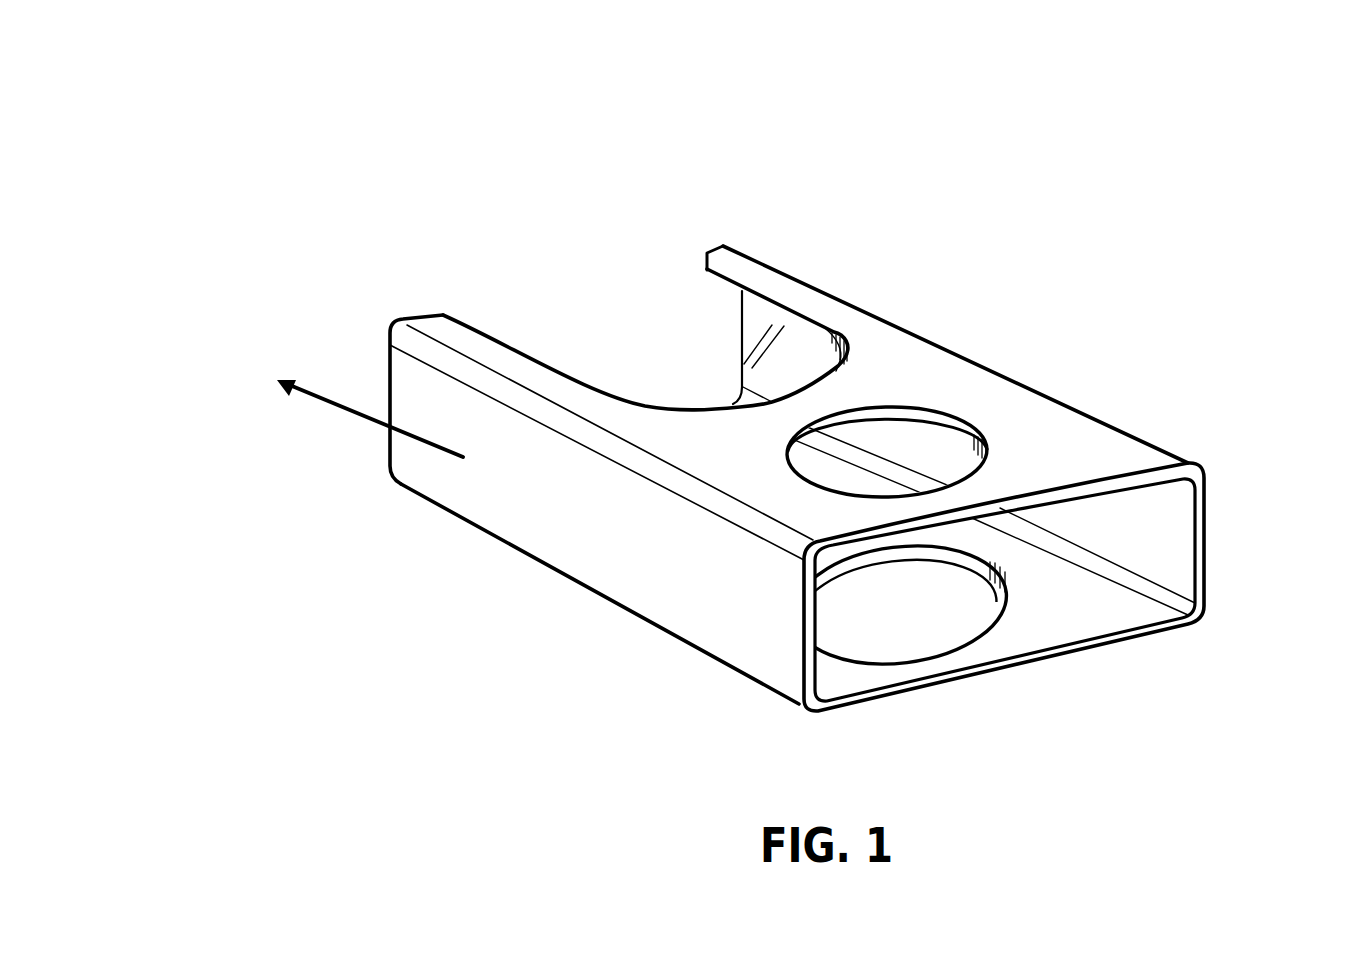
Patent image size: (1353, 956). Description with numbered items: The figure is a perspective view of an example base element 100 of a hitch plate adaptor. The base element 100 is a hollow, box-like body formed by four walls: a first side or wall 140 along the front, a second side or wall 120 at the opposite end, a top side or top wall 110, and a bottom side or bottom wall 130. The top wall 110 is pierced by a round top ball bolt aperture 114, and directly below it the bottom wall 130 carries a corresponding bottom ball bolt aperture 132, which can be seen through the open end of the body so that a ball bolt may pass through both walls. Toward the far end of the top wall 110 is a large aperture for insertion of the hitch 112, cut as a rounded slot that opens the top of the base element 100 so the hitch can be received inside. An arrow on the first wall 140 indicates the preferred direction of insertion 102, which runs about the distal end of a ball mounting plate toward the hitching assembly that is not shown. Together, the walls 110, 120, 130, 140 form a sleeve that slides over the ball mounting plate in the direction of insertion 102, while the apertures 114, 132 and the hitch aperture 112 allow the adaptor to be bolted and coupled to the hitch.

The base element 100 is at (316, 165).
The direction of insertion 102 is at (320, 400).
The top wall 110 is at (1059, 458).
The aperture for insertion of the hitch 112 is at (617, 328).
The top ball bolt aperture 114 is at (897, 446).
The second wall 120 is at (1207, 502).
The bottom wall 130 is at (1090, 662).
The bottom ball bolt aperture 132 is at (960, 613).
The first wall 140 is at (570, 510).